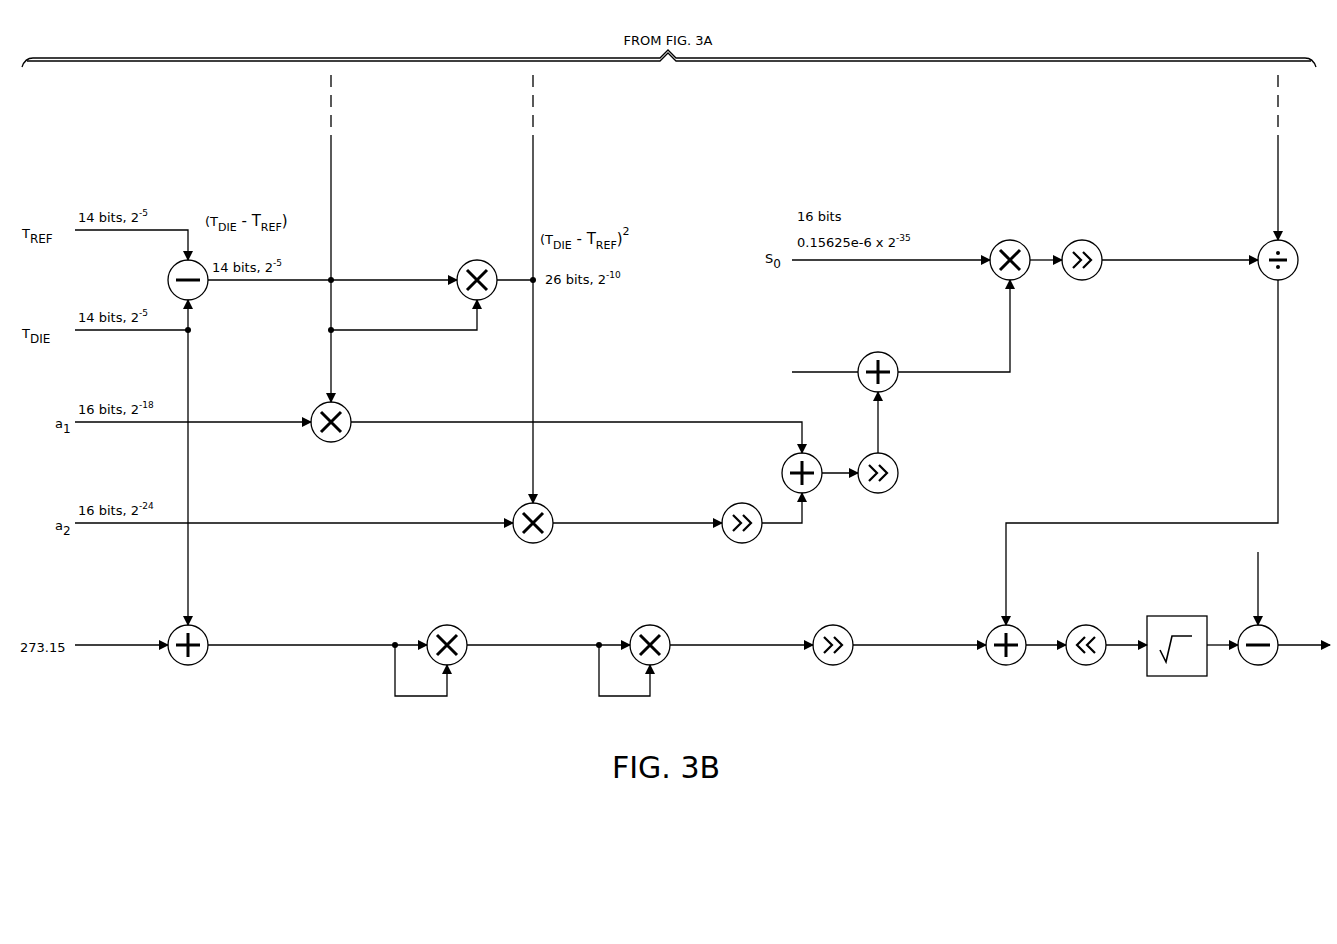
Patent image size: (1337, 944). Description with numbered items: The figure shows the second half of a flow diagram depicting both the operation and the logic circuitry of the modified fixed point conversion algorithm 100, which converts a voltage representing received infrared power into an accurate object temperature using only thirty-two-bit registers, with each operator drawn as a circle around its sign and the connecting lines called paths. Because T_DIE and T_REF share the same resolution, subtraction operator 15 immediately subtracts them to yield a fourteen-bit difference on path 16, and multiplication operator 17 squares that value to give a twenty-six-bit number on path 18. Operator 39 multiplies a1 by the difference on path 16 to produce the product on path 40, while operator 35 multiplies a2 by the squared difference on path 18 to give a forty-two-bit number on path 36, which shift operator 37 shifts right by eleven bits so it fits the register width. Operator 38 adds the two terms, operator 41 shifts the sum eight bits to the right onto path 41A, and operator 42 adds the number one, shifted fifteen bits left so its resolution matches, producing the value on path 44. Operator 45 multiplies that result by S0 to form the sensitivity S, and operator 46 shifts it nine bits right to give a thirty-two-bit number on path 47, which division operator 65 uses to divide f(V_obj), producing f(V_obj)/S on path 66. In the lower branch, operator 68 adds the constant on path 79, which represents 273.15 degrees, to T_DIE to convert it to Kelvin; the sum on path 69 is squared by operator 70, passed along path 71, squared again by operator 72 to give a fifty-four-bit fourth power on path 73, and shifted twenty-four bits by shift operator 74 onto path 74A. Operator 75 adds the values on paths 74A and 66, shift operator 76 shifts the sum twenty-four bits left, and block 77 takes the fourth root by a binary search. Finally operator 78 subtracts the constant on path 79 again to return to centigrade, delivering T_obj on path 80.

The subtraction operator 15 is at (168, 272).
The path 16 is at (331, 223).
The multiplication operator 17 is at (463, 262).
The path 18 is at (533, 300).
The operator 35 is at (520, 543).
The path 36 is at (652, 525).
The shift operator 37 is at (752, 542).
The operator 38 is at (815, 490).
The operator 39 is at (318, 442).
The path 40 is at (712, 422).
The operator 41 is at (897, 482).
The path 41A is at (878, 428).
The operator 42 is at (863, 390).
The path 44 is at (1010, 335).
The operator 45 is at (1024, 246).
The operator 46 is at (1096, 278).
The path 47 is at (1198, 262).
The division operator 65 is at (1288, 238).
The path 66 is at (1278, 405).
The operator 68 is at (175, 664).
The path 69 is at (392, 650).
The operator 70 is at (460, 660).
The path 71 is at (540, 648).
The operator 72 is at (663, 660).
The path 73 is at (745, 648).
The shift operator 74 is at (846, 662).
The path 74A is at (912, 648).
The operator 75 is at (1022, 660).
The shift operator 76 is at (1080, 665).
The fourth root operation block 77 is at (1180, 677).
The operator 78 is at (1265, 665).
The path 79 is at (122, 650).
The path 80 is at (1300, 648).
The conversion algorithm 100 is at (436, 750).